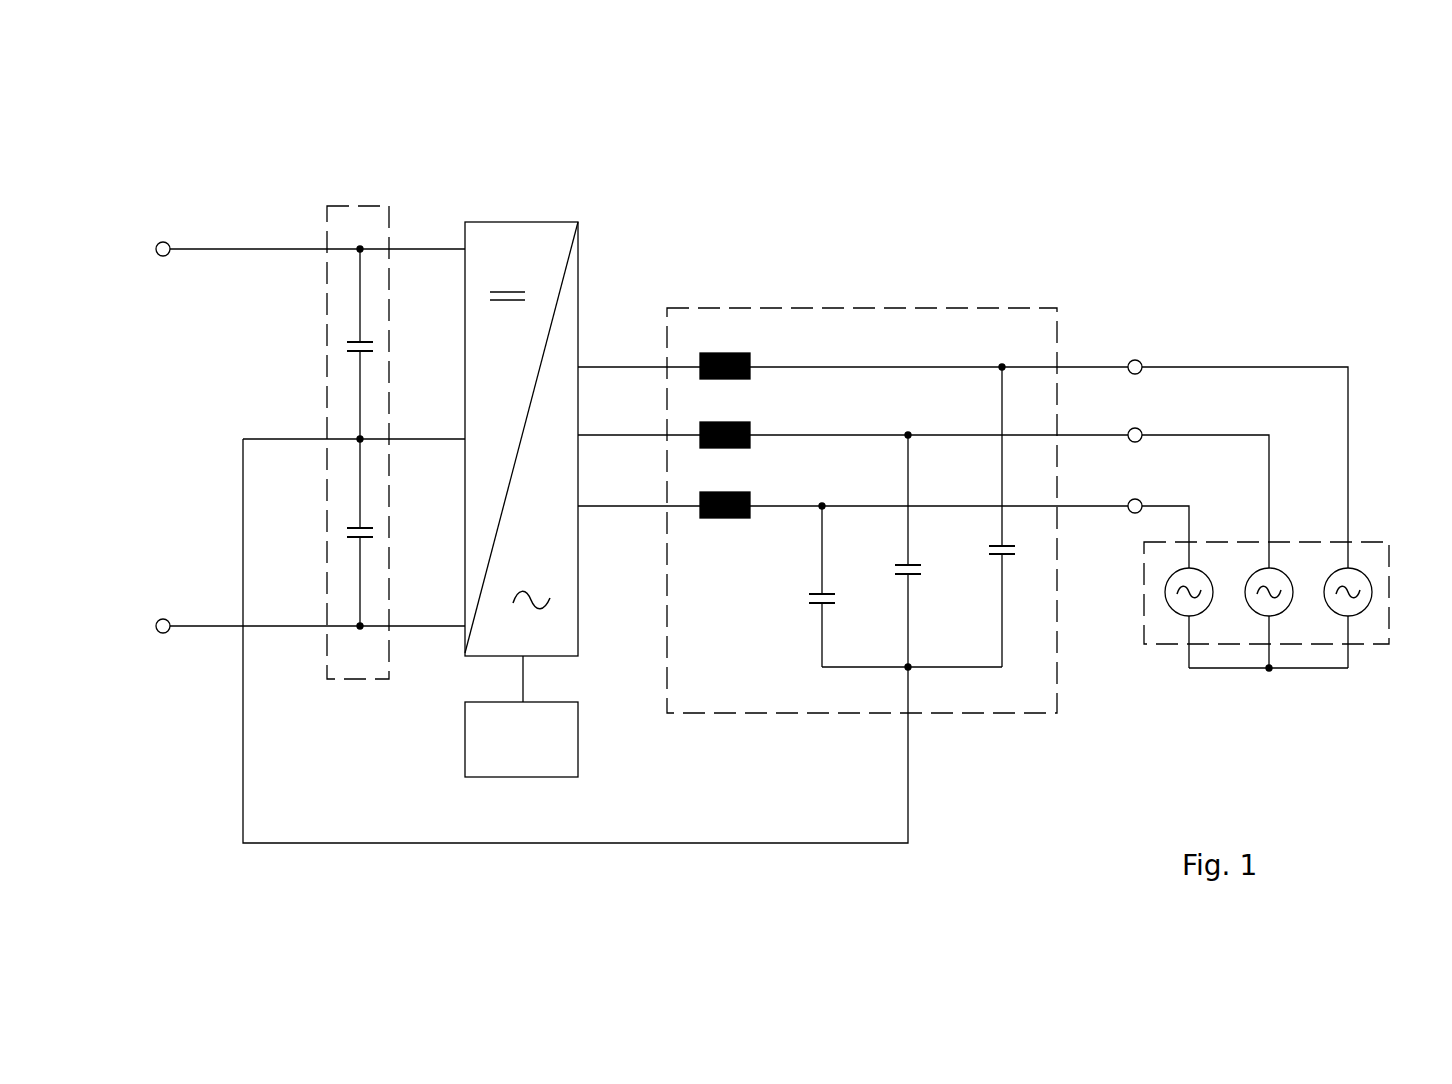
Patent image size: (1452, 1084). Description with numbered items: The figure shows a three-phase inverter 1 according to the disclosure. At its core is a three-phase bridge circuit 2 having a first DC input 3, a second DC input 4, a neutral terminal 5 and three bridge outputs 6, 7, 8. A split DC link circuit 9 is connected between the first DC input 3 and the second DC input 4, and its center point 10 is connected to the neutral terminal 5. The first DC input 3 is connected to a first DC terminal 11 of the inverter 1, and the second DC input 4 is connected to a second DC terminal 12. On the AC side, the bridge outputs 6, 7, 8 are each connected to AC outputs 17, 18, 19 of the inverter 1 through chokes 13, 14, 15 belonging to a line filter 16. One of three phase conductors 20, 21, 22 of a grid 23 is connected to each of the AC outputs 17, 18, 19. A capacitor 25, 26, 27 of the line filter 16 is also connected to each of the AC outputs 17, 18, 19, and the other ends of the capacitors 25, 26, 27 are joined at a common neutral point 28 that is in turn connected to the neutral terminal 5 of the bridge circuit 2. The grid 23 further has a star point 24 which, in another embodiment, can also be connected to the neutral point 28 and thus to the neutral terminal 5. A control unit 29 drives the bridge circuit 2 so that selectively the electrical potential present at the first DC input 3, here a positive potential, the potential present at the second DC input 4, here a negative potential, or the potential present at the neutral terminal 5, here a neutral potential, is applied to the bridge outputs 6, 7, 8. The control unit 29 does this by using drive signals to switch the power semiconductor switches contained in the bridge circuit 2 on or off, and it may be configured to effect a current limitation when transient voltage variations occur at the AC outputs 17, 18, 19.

The inverter 1 is at (979, 180).
The three-phase bridge circuit 2 is at (580, 595).
The first DC input 3 is at (440, 245).
The second DC input 4 is at (432, 631).
The neutral terminal 5 is at (430, 437).
The bridge output 6 is at (615, 365).
The bridge output 7 is at (615, 433).
The bridge output 8 is at (615, 504).
The split DC link circuit 9 is at (356, 204).
The center point 10 is at (355, 437).
The first DC terminal 11 is at (155, 247).
The second DC terminal 12 is at (155, 628).
The choke 13 is at (752, 360).
The choke 14 is at (752, 430).
The choke 15 is at (752, 501).
The line filter 16 is at (851, 306).
The AC output 17 is at (1093, 364).
The AC output 18 is at (1094, 433).
The AC output 19 is at (1093, 504).
The phase conductor 20 is at (1350, 490).
The phase conductor 21 is at (1272, 490).
The phase conductor 22 is at (1193, 528).
The grid 23 is at (1386, 648).
The star point 24 is at (1266, 672).
The capacitor 25 is at (999, 557).
The capacitor 26 is at (904, 576).
The capacitor 27 is at (813, 604).
The neutral point 28 is at (912, 670).
The control unit 29 is at (582, 740).